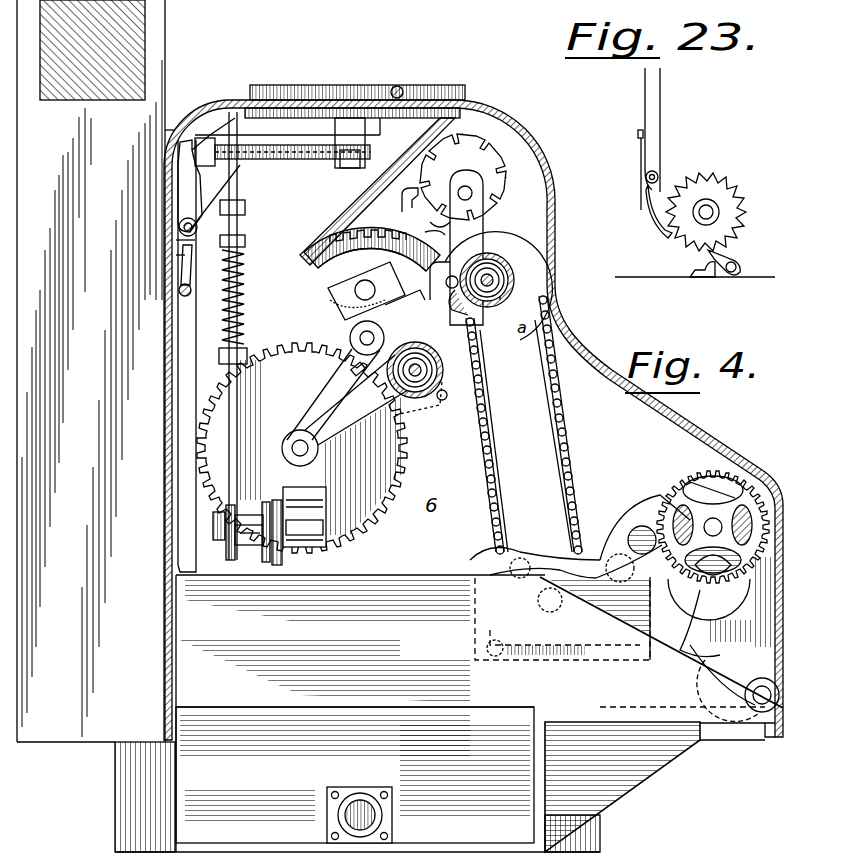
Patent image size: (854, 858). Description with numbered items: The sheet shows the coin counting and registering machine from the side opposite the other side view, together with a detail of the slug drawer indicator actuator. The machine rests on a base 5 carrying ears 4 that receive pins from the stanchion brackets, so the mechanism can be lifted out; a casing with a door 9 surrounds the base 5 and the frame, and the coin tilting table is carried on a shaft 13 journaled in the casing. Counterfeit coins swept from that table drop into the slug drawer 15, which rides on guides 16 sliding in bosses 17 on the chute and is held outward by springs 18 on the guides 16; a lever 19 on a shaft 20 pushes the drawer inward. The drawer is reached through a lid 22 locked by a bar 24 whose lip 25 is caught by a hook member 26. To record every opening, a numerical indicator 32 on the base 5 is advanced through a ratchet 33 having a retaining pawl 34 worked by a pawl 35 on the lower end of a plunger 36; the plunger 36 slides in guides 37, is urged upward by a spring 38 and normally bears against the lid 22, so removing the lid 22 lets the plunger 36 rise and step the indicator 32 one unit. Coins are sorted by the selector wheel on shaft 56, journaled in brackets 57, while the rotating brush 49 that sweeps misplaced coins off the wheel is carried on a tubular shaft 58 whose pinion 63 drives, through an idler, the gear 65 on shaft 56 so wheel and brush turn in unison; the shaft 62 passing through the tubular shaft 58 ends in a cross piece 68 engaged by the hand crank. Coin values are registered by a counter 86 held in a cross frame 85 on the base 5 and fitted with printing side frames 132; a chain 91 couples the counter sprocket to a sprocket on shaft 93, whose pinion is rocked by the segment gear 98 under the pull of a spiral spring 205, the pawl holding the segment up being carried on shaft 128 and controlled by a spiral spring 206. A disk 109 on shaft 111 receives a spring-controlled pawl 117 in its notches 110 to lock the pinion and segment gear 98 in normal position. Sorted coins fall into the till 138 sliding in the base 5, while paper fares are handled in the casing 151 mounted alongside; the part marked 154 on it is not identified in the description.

In FIG. 4, the ears 4 is at (625, 822).
In FIG. 4, the base 5 is at (470, 703).
In FIG. 4, the door 9 is at (722, 445).
In FIG. 4, the shaft 13 is at (395, 88).
In FIG. 4, the slug drawer 15 is at (265, 125).
In FIG. 4, the guides 16 is at (350, 165).
In FIG. 4, the bosses 17 is at (310, 160).
In FIG. 4, the springs 18 is at (336, 215).
In FIG. 4, the lever 19 is at (180, 200).
In FIG. 4, the shaft 20 is at (180, 227).
In FIG. 4, the lid 22 is at (198, 150).
In FIG. 4, the bar 24 is at (175, 240).
In FIG. 4, the lip 25 is at (170, 255).
In FIG. 4, the hook member 26 is at (188, 248).
In FIG. 4, the numerical indicator 32 is at (323, 505).
In FIG. 23, the ratchet 33 is at (723, 188).
In FIG. 4, the ratchet 33 is at (225, 545).
In FIG. 23, the retaining pawl 34 is at (725, 260).
In FIG. 4, the retaining pawl 34 is at (245, 567).
In FIG. 23, the pawl 35 is at (657, 222).
In FIG. 23, the plunger 36 is at (662, 107).
In FIG. 4, the plunger 36 is at (233, 472).
In FIG. 4, the guides 37 is at (245, 207).
In FIG. 4, the spring 38 is at (240, 285).
In FIG. 4, the rotating brush 49 is at (330, 235).
In FIG. 4, the shaft 56 is at (298, 440).
In FIG. 4, the brackets 57 is at (322, 374).
In FIG. 4, the tubular shaft 58 is at (340, 296).
In FIG. 4, the shaft 62 is at (350, 310).
In FIG. 4, the pinion 63 is at (355, 295).
In FIG. 4, the gear 65 is at (395, 455).
In FIG. 4, the cross piece 68 is at (395, 312).
In FIG. 4, the cross frame 85 is at (661, 714).
In FIG. 4, the counter 86 is at (602, 520).
In FIG. 4, the chain 91 is at (495, 462).
In FIG. 4, the shaft 93 is at (500, 265).
In FIG. 4, the segment gear 98 is at (388, 220).
In FIG. 4, the disk 109 is at (500, 182).
In FIG. 4, the notches 110 is at (480, 150).
In FIG. 4, the shaft 111 is at (468, 186).
In FIG. 4, the spring-controlled pawl 117 is at (462, 264).
In FIG. 4, the shaft 128 is at (415, 378).
In FIG. 4, the side frames 132 is at (718, 596).
In FIG. 4, the till 138 is at (355, 775).
In FIG. 4, the casing 151 is at (165, 180).
In FIG. 4, the corner block 154 is at (92, 50).
In FIG. 4, the spiral spring 205 is at (493, 283).
In FIG. 4, the spiral spring 206 is at (450, 365).